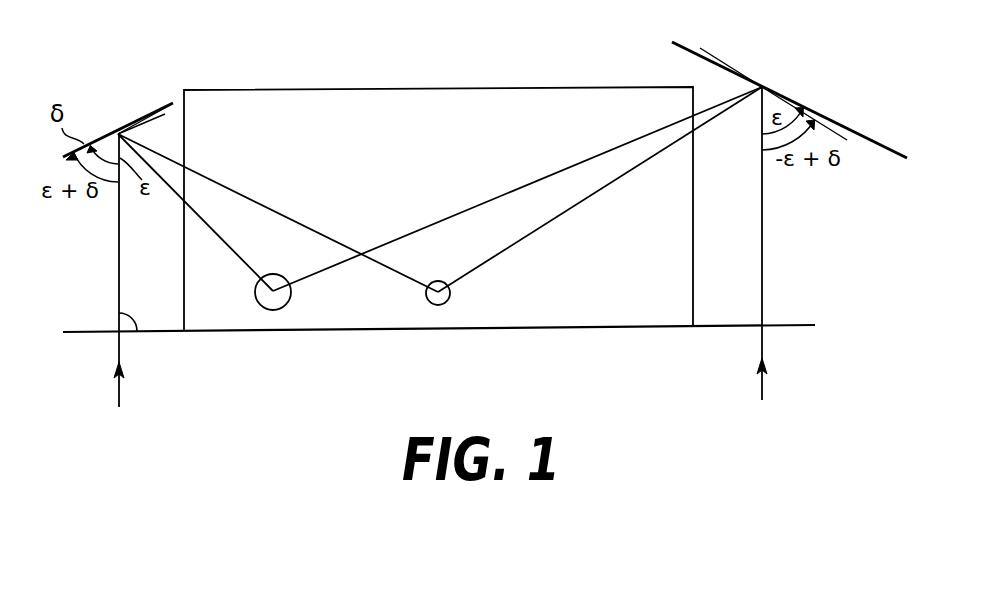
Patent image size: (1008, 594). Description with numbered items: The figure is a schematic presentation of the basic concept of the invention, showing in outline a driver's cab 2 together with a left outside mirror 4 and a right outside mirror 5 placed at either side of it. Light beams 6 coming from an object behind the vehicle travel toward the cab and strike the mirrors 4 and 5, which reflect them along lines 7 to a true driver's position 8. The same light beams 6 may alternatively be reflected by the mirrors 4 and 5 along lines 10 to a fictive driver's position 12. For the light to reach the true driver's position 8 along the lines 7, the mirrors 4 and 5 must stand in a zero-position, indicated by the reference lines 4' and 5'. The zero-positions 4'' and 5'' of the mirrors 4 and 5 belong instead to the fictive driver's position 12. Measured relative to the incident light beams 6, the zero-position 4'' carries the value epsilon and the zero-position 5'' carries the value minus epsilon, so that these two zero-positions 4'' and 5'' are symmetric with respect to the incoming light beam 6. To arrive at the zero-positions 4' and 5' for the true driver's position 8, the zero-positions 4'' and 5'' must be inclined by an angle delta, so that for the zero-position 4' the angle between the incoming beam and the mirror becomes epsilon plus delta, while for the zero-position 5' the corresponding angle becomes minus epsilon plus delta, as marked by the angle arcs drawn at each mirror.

The driver's cab 2 is at (528, 88).
The left outside mirror 4 is at (118, 95).
The zero-position of the left outside mirror for the true driver's position 4' is at (171, 136).
The zero-position of the left outside mirror for the fictive driver's position 4'' is at (154, 88).
The right outside mirror 5 is at (789, 79).
The zero-position of the right outside mirror for the true driver's position 5' is at (731, 44).
The zero-position of the right outside mirror for the fictive driver's position 5'' is at (834, 144).
The light beams 6 is at (118, 258).
The lines 7 is at (238, 258).
The true driver's position 8 is at (273, 310).
The lines 10 is at (283, 214).
The fictive driver's position 12 is at (440, 305).